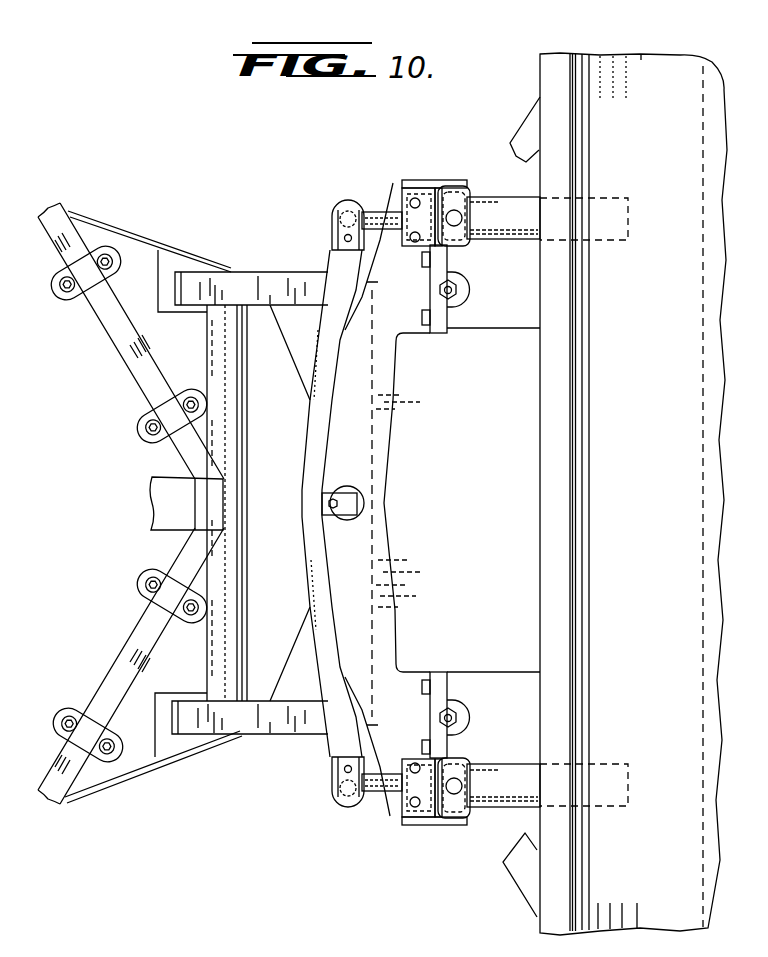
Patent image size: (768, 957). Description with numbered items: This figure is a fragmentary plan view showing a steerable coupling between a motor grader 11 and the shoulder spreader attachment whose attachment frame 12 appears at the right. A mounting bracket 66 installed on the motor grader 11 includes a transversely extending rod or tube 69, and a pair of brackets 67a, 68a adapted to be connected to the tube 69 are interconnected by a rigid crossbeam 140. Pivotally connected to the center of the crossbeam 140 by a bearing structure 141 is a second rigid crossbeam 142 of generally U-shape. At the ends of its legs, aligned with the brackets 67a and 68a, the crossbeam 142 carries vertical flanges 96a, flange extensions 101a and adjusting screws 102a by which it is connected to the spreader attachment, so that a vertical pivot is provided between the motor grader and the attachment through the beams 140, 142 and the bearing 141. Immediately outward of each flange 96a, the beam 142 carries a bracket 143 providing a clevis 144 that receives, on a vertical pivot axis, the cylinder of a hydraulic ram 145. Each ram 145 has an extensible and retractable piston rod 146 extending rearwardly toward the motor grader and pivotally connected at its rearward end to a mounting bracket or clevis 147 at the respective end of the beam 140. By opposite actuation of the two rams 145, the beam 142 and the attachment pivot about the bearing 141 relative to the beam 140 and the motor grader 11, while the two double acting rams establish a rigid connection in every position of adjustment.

The attachment frame 12 is at (612, 55).
The motor grader 11 is at (109, 210).
The mounting bracket 66 is at (148, 243).
The bracket 67a is at (246, 283).
The bracket 68a is at (256, 722).
The transversely extending rod or tube 69 is at (240, 375).
The rigid crossbeam 140 is at (312, 431).
The bearing structure 141 is at (340, 518).
The second rigid crossbeam 142 is at (390, 430).
The bracket 143 is at (414, 183).
The clevis 144 is at (458, 208).
The hydraulic ram 145 is at (497, 230).
The piston rod 146 is at (377, 213).
The mounting bracket or clevis 147 is at (332, 220).
The vertical flange 96a is at (432, 334).
The flange extension 101a is at (454, 300).
The adjusting screw 102a is at (460, 291).